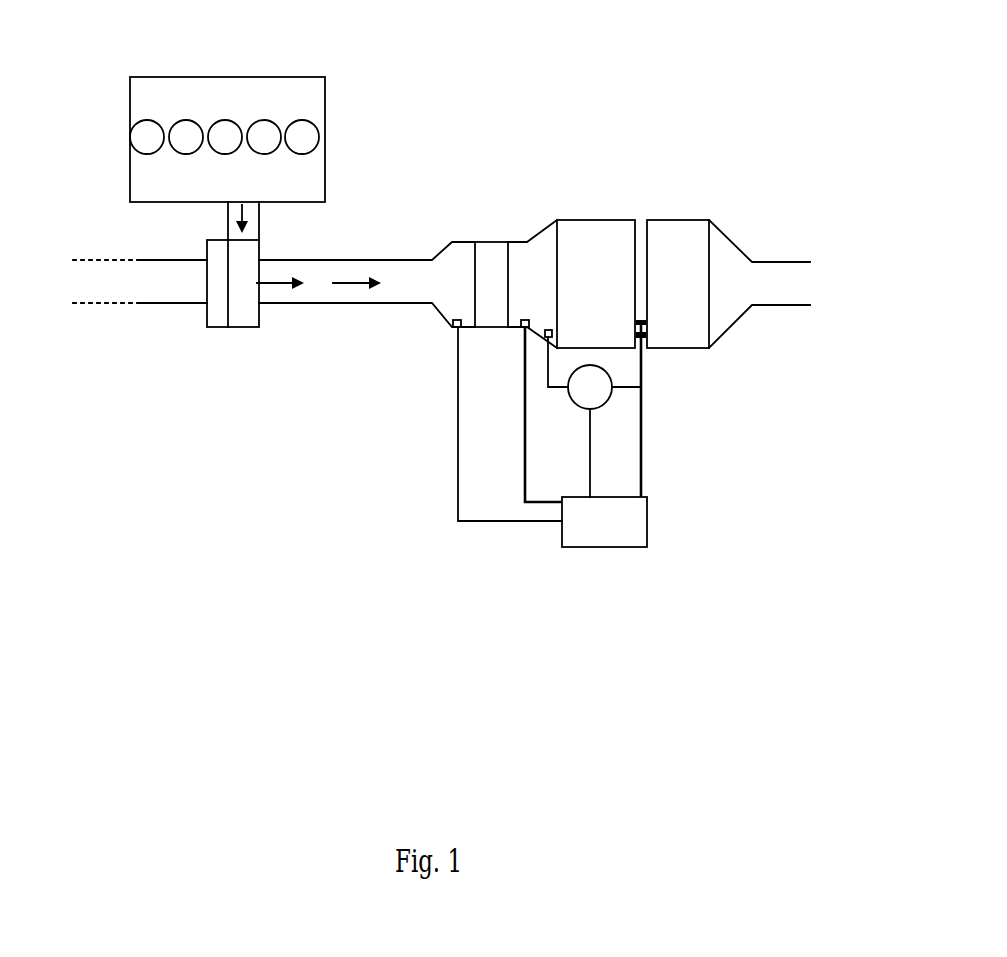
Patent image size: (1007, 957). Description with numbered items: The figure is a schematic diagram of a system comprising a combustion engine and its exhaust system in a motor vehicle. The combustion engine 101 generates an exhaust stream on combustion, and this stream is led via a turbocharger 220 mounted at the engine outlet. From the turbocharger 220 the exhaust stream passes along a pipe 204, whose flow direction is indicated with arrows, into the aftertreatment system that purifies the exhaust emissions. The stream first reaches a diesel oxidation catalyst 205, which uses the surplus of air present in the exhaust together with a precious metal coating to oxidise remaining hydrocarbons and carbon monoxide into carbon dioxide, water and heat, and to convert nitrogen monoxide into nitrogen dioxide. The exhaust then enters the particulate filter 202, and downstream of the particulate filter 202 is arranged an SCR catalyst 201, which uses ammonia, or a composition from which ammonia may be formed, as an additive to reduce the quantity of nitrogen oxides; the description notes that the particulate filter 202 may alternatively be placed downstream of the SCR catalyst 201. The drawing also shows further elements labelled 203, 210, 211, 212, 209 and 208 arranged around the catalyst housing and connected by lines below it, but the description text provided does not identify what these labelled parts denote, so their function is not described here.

The combustion engine 101 is at (287, 92).
The turbocharger 220 is at (233, 327).
The pipe 204 is at (398, 268).
The diesel oxidation catalyst (DOC) 205 is at (498, 242).
The particulate filter (DPF) 202 is at (612, 228).
The SCR catalyst 203 is at (642, 275).
The SCR catalyst 201 is at (703, 235).
The temperature sensor upstream of DOC 210 is at (442, 330).
The temperature sensor downstream of DOC 211 is at (518, 330).
The temperature sensor between DPF and SCR 212 is at (650, 330).
The differential pressure sensor 209 is at (607, 395).
The controller 208 is at (602, 538).